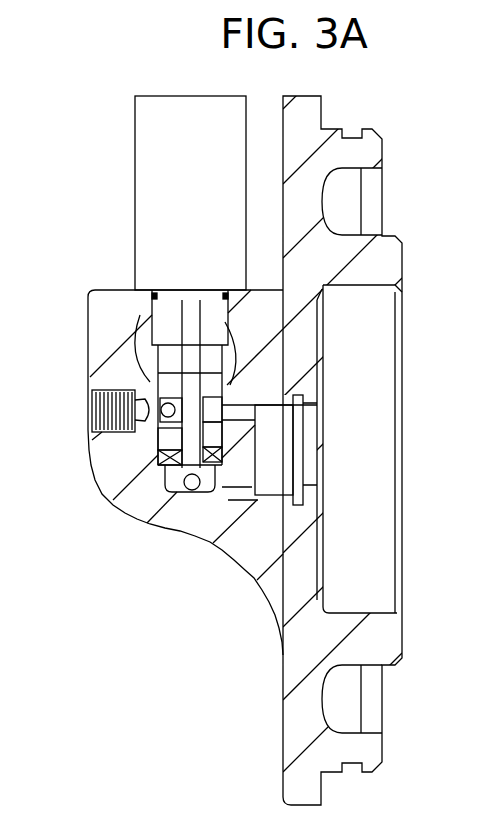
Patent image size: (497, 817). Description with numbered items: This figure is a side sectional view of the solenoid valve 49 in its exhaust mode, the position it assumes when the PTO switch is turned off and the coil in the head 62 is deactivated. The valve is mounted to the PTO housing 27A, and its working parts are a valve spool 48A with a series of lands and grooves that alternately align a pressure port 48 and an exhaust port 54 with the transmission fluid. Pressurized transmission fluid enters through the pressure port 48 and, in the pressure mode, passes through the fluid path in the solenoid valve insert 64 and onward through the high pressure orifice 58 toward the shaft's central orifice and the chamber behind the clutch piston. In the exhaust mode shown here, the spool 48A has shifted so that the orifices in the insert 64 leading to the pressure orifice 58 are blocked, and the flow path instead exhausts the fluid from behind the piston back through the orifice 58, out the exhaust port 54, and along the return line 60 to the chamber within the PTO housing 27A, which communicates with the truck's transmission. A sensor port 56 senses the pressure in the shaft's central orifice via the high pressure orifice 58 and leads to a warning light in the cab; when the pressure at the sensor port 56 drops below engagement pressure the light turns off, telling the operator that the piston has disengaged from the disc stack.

The PTO housing 27A is at (338, 129).
The solenoid valve 49 is at (124, 278).
The head 62 is at (232, 156).
The pressure port 48 is at (186, 292).
The solenoid valve insert 64 is at (232, 320).
The valve spool 48A is at (230, 384).
The high pressure orifice 58 is at (244, 407).
The sensor port 56 is at (92, 413).
The exhaust port 54 is at (150, 523).
The return line 60 is at (228, 506).